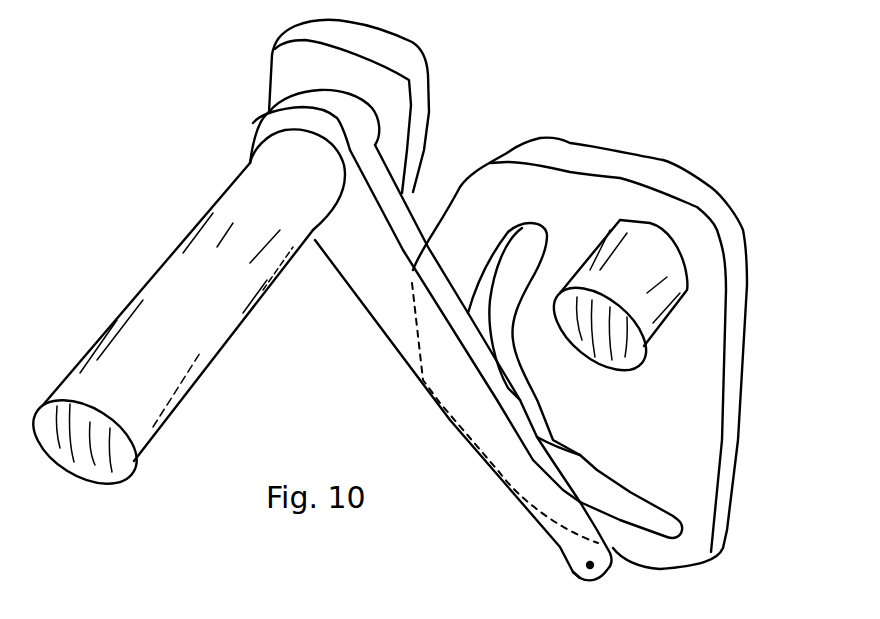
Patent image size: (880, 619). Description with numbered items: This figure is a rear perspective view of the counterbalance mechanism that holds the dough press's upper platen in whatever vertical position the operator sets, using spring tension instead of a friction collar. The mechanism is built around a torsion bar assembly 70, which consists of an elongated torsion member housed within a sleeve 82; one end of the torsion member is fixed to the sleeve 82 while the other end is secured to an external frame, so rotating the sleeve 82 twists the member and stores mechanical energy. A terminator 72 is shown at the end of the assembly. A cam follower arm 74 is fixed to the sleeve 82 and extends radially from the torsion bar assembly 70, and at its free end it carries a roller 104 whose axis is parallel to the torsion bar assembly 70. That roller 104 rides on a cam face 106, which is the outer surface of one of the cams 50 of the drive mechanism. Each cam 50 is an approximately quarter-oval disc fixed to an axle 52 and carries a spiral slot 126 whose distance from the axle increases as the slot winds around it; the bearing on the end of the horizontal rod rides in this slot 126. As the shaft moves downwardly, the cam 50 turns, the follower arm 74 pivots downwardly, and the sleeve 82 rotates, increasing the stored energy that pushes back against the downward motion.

The cam 50 is at (752, 303).
The axle 52 is at (653, 340).
The torsion bar assembly 70 is at (133, 287).
The terminator 72 is at (428, 62).
The cam follower arm 74 is at (353, 287).
The sleeve 82 is at (242, 172).
The roller 104 is at (622, 546).
The cam face 106 is at (395, 343).
The spiral slot 126 is at (623, 488).